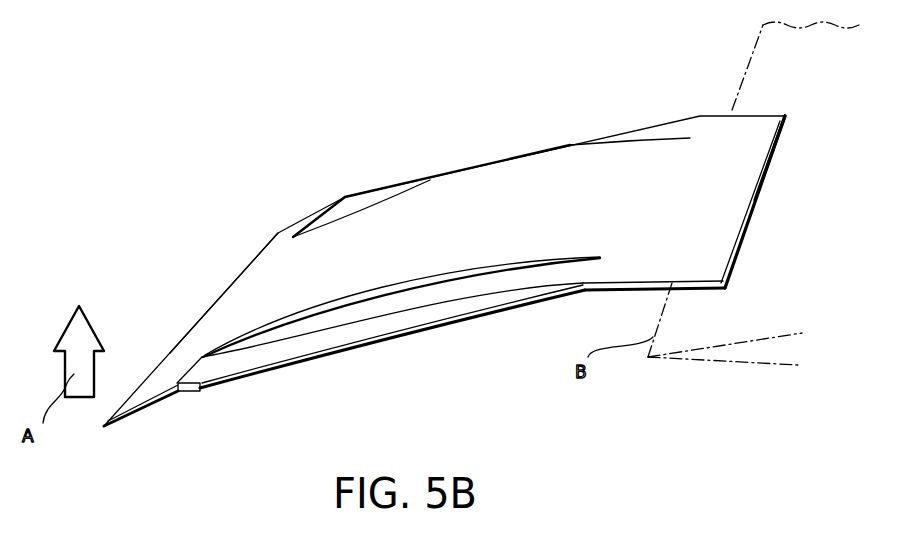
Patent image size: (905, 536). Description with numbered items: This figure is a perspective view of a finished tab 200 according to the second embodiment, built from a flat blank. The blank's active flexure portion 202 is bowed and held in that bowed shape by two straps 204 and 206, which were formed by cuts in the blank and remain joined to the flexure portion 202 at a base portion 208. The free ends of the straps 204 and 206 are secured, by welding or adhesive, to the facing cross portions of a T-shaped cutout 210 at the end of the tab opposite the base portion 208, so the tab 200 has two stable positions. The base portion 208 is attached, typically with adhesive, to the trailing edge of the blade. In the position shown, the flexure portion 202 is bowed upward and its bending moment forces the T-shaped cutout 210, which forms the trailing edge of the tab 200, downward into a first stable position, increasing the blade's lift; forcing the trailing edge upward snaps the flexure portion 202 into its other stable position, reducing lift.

The tab 200 is at (712, 103).
The flexure portion 202 is at (500, 198).
The strap 204 is at (353, 199).
The strap 206 is at (360, 328).
The base portion 208 is at (740, 194).
The T-shaped cutout 210 is at (243, 293).